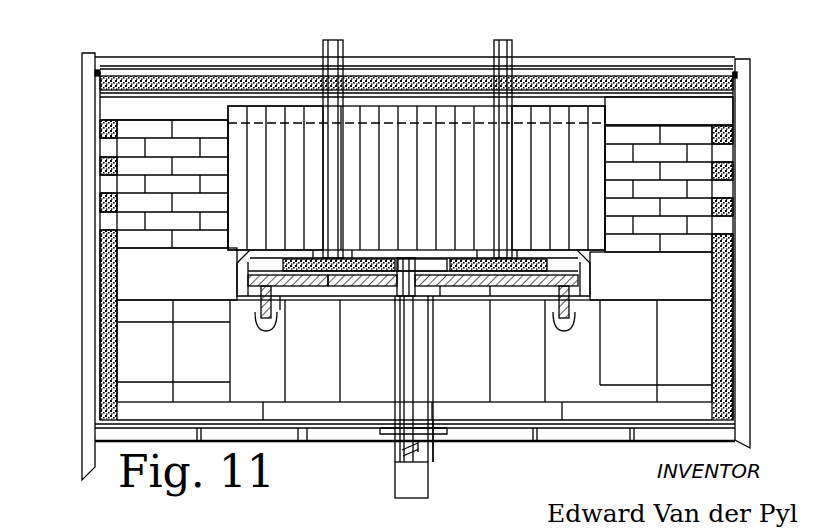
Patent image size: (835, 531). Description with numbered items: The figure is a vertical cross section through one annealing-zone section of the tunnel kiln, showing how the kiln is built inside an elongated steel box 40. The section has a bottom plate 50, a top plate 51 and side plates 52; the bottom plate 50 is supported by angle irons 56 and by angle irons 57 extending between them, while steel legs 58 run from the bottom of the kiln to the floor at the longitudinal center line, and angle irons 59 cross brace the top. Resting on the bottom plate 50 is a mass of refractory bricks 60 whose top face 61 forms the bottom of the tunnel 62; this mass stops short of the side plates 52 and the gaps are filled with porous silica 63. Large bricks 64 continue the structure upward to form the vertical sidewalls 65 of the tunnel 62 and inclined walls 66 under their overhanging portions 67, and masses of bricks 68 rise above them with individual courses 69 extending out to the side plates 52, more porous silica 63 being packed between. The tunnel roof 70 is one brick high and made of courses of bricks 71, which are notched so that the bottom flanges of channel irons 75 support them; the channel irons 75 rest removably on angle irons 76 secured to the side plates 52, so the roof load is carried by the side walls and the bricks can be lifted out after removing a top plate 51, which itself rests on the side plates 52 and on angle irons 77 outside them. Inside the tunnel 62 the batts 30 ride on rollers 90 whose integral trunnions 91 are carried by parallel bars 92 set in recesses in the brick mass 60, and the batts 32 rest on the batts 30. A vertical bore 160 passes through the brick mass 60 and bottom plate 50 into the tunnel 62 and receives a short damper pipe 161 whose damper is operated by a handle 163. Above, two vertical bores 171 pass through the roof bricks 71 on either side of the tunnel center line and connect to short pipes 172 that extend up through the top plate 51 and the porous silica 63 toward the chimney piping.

The steel box 40 is at (595, 58).
The angle irons 59 is at (237, 60).
The top plate 51 is at (395, 73).
The angle irons 77 is at (94, 72).
The porous silica 63 is at (105, 335).
The angle irons 76 is at (100, 120).
The channel irons 75 is at (680, 105).
The side plates 52 is at (105, 268).
The masses of bricks 68 is at (140, 183).
The individual courses 69 is at (108, 145).
The large bricks 64 is at (125, 290).
The mass of refractory bricks 60 is at (238, 344).
The tunnel roof 70 is at (430, 107).
The courses of bricks 71 is at (290, 150).
The short pipes 172 is at (333, 40).
The vertical bores 171 is at (336, 202).
The overhanging portions 67 is at (237, 252).
The inclined walls 66 is at (248, 265).
The vertical sidewalls 65 is at (237, 286).
The batts 32 is at (303, 296).
The batts 30 is at (370, 296).
The top face 61 is at (465, 296).
The tunnel 62 is at (507, 296).
The rollers 90 is at (262, 290).
The bars 92 is at (414, 331).
The trunnions 91 is at (283, 296).
The vertical bore 160 is at (415, 375).
The damper pipe 161 is at (432, 460).
The steel legs 58 is at (398, 490).
The handle 163 is at (400, 452).
The bottom plate 50 is at (355, 430).
The angle irons 56 is at (470, 441).
The angle irons 57 is at (295, 441).